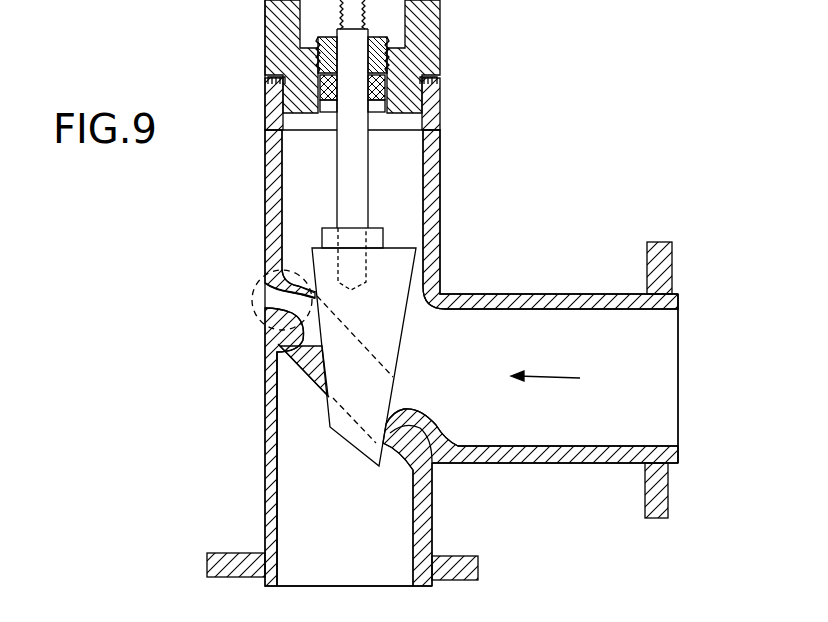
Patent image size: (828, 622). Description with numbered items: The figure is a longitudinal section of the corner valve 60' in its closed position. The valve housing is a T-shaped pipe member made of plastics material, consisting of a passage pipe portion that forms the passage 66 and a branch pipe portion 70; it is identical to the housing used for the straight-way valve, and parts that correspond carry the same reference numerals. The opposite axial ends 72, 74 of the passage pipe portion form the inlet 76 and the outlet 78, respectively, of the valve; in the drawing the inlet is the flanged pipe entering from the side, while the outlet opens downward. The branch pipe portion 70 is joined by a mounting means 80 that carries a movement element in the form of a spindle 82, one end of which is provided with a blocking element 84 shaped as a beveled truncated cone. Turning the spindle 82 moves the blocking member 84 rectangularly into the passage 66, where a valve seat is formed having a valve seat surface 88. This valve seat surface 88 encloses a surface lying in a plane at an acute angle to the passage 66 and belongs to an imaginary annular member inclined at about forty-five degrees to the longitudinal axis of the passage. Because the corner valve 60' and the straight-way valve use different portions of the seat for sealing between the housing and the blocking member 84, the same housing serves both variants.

The corner valve 60' is at (471, 293).
The outlet 78 is at (229, 110).
The mounting means 80 is at (408, 62).
The spindle 82 is at (360, 177).
The blocking element 84 is at (396, 291).
The valve seat surface 88 is at (303, 297).
The passage 66 is at (298, 442).
The branch pipe portion 70 is at (583, 489).
The axial end 72 is at (663, 388).
The axial end 74 is at (313, 547).
The inlet 76 is at (403, 595).